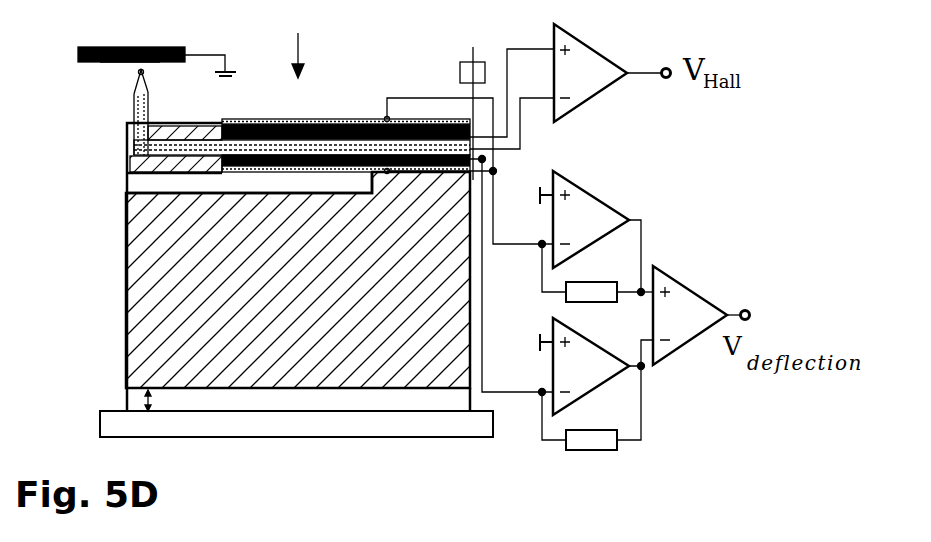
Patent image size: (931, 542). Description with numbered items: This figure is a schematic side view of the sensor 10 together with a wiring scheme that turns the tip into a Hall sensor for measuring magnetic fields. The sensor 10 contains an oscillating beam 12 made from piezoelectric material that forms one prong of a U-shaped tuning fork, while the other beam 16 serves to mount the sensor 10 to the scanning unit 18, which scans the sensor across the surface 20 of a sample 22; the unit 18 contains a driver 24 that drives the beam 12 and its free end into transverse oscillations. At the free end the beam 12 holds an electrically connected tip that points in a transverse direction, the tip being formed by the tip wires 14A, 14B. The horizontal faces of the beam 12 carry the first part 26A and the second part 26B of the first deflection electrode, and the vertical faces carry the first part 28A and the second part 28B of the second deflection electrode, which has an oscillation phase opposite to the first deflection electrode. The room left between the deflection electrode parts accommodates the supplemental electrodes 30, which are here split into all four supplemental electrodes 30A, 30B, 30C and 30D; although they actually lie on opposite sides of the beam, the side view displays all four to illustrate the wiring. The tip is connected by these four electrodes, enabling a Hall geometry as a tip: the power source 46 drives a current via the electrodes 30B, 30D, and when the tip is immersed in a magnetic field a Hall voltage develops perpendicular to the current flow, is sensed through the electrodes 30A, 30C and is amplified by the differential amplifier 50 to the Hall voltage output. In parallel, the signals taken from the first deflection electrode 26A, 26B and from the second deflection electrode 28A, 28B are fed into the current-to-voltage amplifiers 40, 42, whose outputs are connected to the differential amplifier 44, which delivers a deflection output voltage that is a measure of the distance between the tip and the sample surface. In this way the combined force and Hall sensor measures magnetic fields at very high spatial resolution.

The sensor 10 is at (112, 148).
The beam 12 is at (299, 47).
The tip wire 14A is at (133, 101).
The tip wire 14B is at (133, 118).
The beam 16 is at (150, 311).
The scanning unit 18 is at (125, 427).
The surface 20 is at (133, 47).
The sample 22 is at (122, 65).
The driver 24 is at (138, 400).
The first part of first deflection electrode 26A is at (350, 119).
The second part of first deflection electrode 26B is at (178, 204).
The first part of second deflection electrode 28A is at (325, 124).
The second part of second deflection electrode 28B is at (240, 176).
The supplemental electrodes 30 is at (192, 174).
The supplemental electrode 30A is at (273, 125).
The supplemental electrode 30B is at (192, 177).
The supplemental electrode 30C is at (275, 166).
The supplemental electrode 30D is at (176, 174).
The current-to-voltage amplifier 40 is at (579, 365).
The current-to-voltage amplifier 42 is at (577, 216).
The differential amplifier 44 is at (683, 310).
The power source 46 is at (472, 106).
The differential amplifier 50 is at (578, 72).